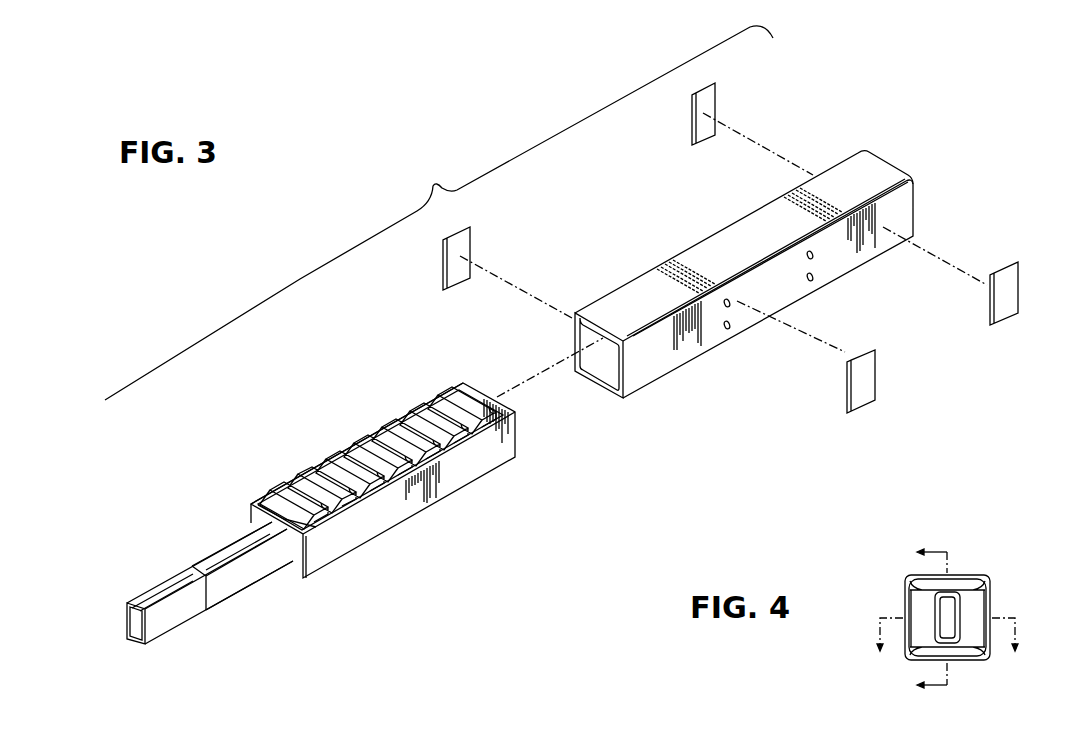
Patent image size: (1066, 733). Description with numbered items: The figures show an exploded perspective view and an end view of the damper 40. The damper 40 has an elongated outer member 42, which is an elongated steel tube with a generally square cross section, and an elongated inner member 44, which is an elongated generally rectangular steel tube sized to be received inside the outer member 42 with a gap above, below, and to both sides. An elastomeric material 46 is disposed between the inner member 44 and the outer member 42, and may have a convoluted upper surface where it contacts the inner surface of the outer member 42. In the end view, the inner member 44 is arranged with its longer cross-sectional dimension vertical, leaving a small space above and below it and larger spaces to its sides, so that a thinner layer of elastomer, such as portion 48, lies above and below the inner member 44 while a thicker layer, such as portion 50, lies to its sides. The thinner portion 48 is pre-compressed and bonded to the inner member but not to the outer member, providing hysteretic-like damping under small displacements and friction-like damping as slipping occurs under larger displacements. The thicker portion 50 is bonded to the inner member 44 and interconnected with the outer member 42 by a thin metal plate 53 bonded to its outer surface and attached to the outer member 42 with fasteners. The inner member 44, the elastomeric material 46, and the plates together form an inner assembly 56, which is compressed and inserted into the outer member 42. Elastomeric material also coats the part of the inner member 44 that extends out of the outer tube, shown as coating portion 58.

In FIG. 3, the damper 40 is at (434, 188).
In FIG. 4, the damper 40 is at (929, 616).
In FIG. 3, the outer member 42 is at (727, 239).
In FIG. 4, the outer member 42 is at (912, 578).
In FIG. 3, the inner member 44 is at (172, 617).
In FIG. 4, the inner member 44 is at (962, 605).
In FIG. 4, the elastomeric material 46 is at (970, 637).
In FIG. 4, the elastomeric portion 48 is at (963, 583).
In FIG. 4, the elastomeric portion 50 is at (917, 602).
In FIG. 3, the thin metal plate 53 is at (337, 546).
In FIG. 3, the inner assembly 56 is at (384, 485).
In FIG. 3, the coating portion 58 is at (246, 573).